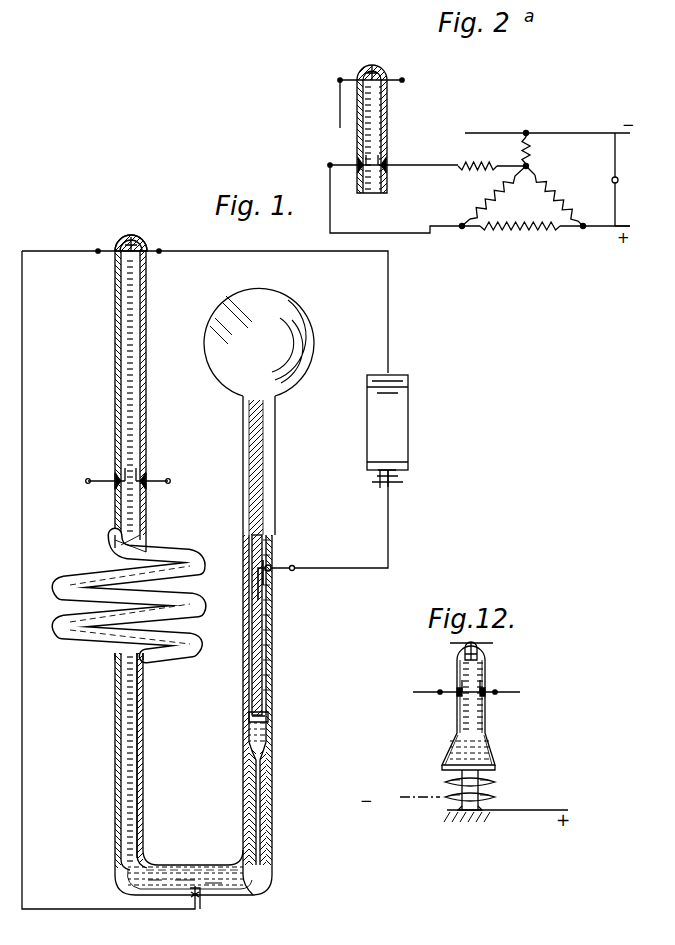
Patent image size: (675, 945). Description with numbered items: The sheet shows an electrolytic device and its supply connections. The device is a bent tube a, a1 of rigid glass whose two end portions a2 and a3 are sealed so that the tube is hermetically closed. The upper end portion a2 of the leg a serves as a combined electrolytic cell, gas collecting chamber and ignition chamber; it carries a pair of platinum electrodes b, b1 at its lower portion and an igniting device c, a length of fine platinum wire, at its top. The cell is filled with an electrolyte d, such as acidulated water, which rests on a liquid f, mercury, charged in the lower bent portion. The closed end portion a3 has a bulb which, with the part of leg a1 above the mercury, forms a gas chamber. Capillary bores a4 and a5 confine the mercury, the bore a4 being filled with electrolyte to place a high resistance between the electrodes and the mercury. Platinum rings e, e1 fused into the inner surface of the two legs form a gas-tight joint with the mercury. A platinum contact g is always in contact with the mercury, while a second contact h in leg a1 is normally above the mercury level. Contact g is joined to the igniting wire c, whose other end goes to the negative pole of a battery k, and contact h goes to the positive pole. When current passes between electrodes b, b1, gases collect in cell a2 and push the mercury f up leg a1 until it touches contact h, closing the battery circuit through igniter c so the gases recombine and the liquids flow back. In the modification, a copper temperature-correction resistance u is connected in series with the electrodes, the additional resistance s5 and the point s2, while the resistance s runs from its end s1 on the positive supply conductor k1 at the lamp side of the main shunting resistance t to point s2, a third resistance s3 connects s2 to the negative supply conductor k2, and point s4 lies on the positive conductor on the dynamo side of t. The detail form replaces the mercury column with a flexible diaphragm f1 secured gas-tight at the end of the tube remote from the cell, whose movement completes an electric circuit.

In FIG. 1, the leg of bent tube a is at (114, 822).
In FIG. 12, the leg of bent tube a is at (486, 723).
In FIG. 1, the leg of bent tube a1 is at (248, 680).
In FIG. 1, the upper end portion (electrolytic cell) a2 is at (117, 304).
In FIG. 2A, the upper end portion (electrolytic cell) a2 is at (368, 112).
In FIG. 12, the upper end portion (electrolytic cell) a2 is at (480, 668).
In FIG. 1, the upper closed end portion with bulb a3 is at (288, 368).
In FIG. 1, the capillary bore a4 is at (74, 628).
In FIG. 1, the capillary bore a5 is at (265, 776).
In FIG. 1, the electrode b is at (118, 474).
In FIG. 2A, the electrode b is at (362, 157).
In FIG. 12, the electrode b is at (460, 684).
In FIG. 1, the electrode b1 is at (140, 473).
In FIG. 2A, the electrode b1 is at (384, 158).
In FIG. 12, the electrode b1 is at (484, 682).
In FIG. 1, the igniting device c is at (133, 246).
In FIG. 2A, the igniting device c is at (378, 70).
In FIG. 1, the electrolyte d is at (128, 380).
In FIG. 12, the electrolyte d is at (460, 722).
In FIG. 1, the platinum ring e is at (122, 775).
In FIG. 1, the platinum ring e1 is at (270, 716).
In FIG. 1, the liquid (mercury) f is at (250, 828).
In FIG. 12, the flexible diaphragm f1 is at (497, 793).
In FIG. 1, the platinum contact g is at (200, 900).
In FIG. 1, the platinum contact h is at (262, 602).
In FIG. 1, the battery k is at (378, 432).
In FIG. 2A, the positive supply conductor k1 is at (619, 232).
In FIG. 2A, the negative supply conductor k2 is at (530, 132).
In FIG. 2A, the resistance s is at (558, 194).
In FIG. 2A, the end of resistance s s1 is at (583, 229).
In FIG. 2A, the end of resistance s s2 is at (528, 166).
In FIG. 2A, the third resistance s3 is at (530, 148).
In FIG. 2A, the point on positive conductor s4 is at (462, 229).
In FIG. 2A, the additional resistance s5 is at (488, 200).
In FIG. 2A, the main shunting resistance t is at (538, 232).
In FIG. 2A, the resistance u is at (489, 158).